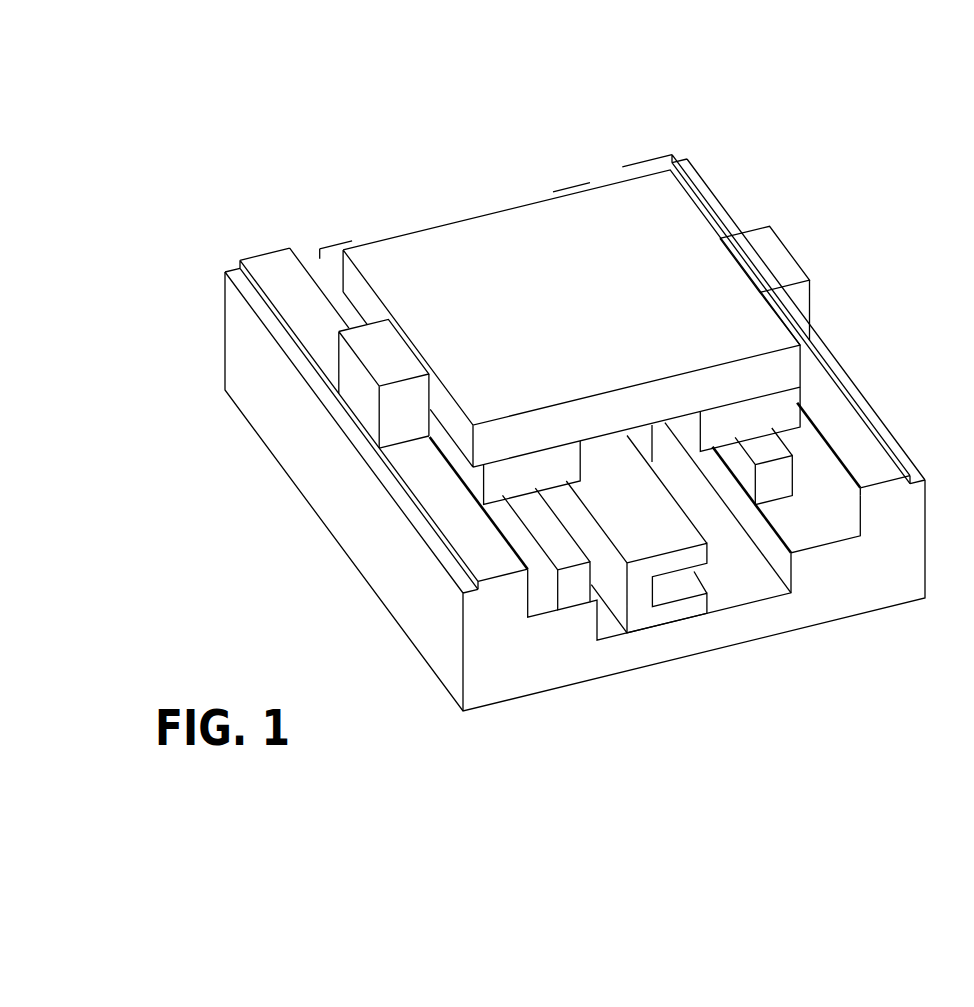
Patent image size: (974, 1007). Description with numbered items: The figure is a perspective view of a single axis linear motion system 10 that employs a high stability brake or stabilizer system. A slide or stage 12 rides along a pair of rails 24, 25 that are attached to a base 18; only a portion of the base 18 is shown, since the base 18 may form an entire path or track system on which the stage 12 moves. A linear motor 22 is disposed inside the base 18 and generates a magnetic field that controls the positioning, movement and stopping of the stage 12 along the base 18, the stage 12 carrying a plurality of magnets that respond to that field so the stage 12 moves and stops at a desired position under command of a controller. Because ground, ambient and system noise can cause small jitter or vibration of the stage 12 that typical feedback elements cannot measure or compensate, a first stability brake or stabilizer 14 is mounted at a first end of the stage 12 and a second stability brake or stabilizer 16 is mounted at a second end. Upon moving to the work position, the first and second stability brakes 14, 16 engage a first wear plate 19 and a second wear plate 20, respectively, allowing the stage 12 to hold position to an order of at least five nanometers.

The linear motion system 10 is at (870, 119).
The slide or stage 12 is at (468, 232).
The first stability brake or stabilizer 14 is at (358, 392).
The second stability brake or stabilizer 16 is at (757, 249).
The base 18 is at (377, 573).
The first wear plate 19 is at (430, 477).
The second wear plate 20 is at (855, 421).
The linear motor 22 is at (665, 560).
The rail 24 is at (793, 483).
The rail 25 is at (563, 555).